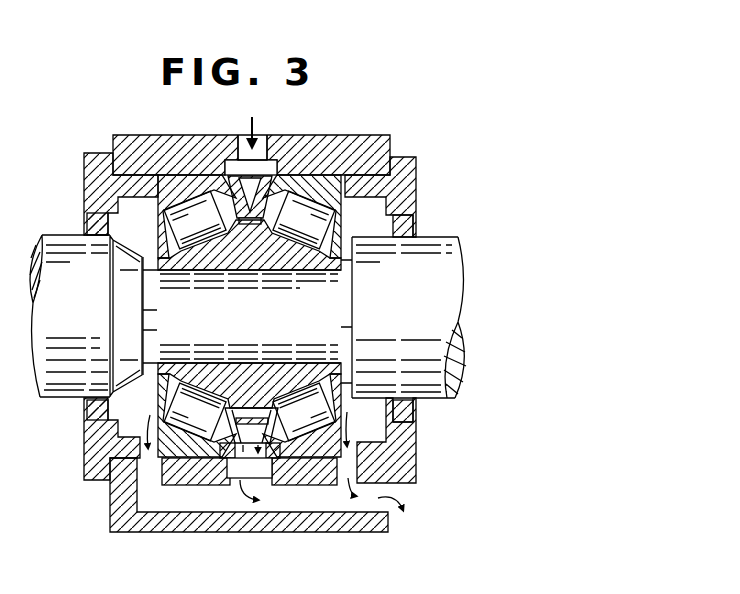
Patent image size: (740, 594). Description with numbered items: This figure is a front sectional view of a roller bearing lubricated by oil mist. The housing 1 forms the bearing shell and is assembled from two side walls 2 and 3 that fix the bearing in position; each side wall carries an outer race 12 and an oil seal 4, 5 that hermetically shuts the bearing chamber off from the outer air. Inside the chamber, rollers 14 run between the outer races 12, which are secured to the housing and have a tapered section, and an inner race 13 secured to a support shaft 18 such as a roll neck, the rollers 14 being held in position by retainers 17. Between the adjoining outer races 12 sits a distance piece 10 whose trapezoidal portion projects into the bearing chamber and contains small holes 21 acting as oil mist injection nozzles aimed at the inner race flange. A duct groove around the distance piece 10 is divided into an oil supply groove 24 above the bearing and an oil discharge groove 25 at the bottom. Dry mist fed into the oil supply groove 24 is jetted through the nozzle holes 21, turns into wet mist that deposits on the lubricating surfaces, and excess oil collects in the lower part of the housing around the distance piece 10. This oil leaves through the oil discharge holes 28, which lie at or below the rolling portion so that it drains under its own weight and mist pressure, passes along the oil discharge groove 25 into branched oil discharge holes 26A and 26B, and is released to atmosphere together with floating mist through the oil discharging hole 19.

The housing 1 is at (382, 140).
The side wall 2 is at (410, 163).
The side wall 3 is at (87, 167).
The oil seal 4 is at (413, 222).
The oil seal 5 is at (87, 218).
The distance piece 10 is at (226, 186).
The outer race 12 is at (176, 180).
The inner race 13 is at (225, 267).
The roller 14 is at (249, 314).
The retainer 17 is at (280, 243).
The support shaft 18 is at (160, 338).
The oil discharging hole 19 is at (338, 506).
The small hole 21 is at (277, 167).
The oil supply groove 24 is at (268, 165).
The oil discharge groove 25 is at (235, 480).
The branched oil discharge hole 26A is at (150, 483).
The branched oil discharge hole 26B is at (391, 502).
The oil discharge hole 28 is at (272, 488).